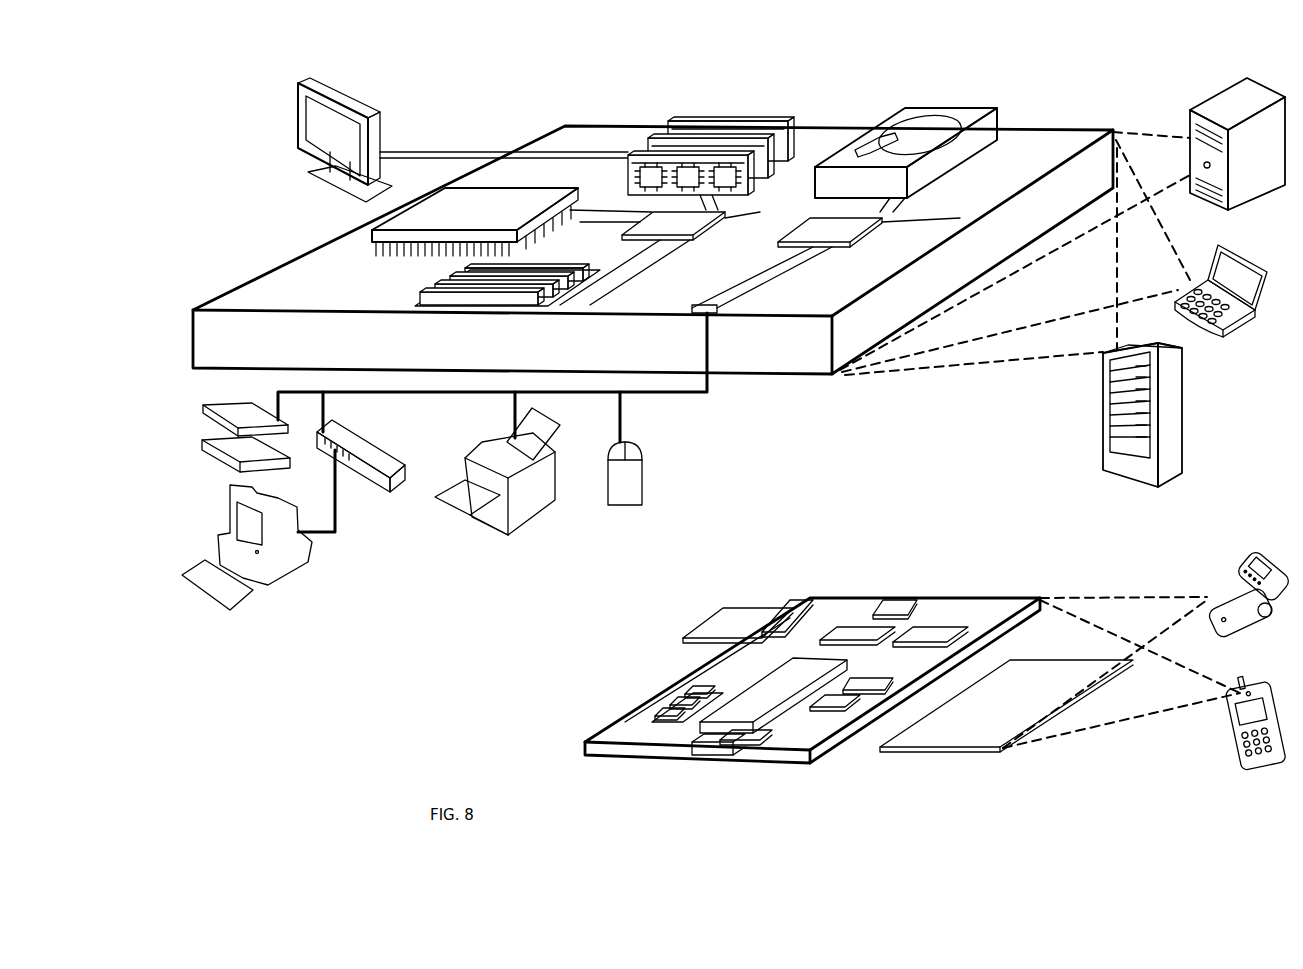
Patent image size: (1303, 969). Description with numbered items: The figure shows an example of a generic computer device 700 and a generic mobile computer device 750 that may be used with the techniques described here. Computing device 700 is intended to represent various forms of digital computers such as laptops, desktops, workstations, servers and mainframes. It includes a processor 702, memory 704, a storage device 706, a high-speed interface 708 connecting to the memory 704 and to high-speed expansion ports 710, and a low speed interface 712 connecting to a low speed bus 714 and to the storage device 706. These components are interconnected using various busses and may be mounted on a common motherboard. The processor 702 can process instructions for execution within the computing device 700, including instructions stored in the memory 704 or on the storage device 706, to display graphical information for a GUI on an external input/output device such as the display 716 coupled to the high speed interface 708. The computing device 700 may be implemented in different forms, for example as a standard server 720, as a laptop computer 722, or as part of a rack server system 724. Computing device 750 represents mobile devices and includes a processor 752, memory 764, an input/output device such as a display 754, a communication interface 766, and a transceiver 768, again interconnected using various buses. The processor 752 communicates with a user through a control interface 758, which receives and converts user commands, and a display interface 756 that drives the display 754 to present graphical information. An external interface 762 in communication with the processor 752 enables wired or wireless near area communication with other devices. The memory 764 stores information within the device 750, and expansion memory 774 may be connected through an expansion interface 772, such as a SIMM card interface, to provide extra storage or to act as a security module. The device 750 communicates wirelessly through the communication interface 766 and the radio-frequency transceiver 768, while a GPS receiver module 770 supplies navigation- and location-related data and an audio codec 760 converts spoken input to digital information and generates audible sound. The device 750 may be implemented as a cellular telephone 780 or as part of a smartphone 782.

The computing device 700 is at (491, 97).
The processor 702 is at (372, 237).
The memory 704 is at (681, 117).
The storage device 706 is at (896, 112).
The high-speed interface 708 is at (650, 224).
The high-speed expansion ports 710 is at (443, 280).
The low speed interface 712 is at (833, 228).
The low speed bus 714 is at (712, 318).
The display 716 is at (294, 81).
The standard server 720 is at (1186, 113).
The laptop computer 722 is at (1214, 244).
The rack server system 724 is at (1099, 426).
The mobile computing device 750 is at (789, 570).
The processor 752 is at (752, 736).
The display 754 is at (1003, 750).
The display interface 756 is at (823, 748).
The control interface 758 is at (863, 722).
The audio codec 760 is at (866, 692).
The external interface 762 is at (712, 757).
The memory 764 is at (670, 714).
The communication interface 766 is at (857, 628).
The transceiver 768 is at (935, 628).
The GPS receiver module 770 is at (899, 603).
The expansion interface 772 is at (784, 602).
The expansion memory 774 is at (722, 606).
The cellular telephone 780 is at (1258, 544).
The smartphone 782 is at (1242, 674).